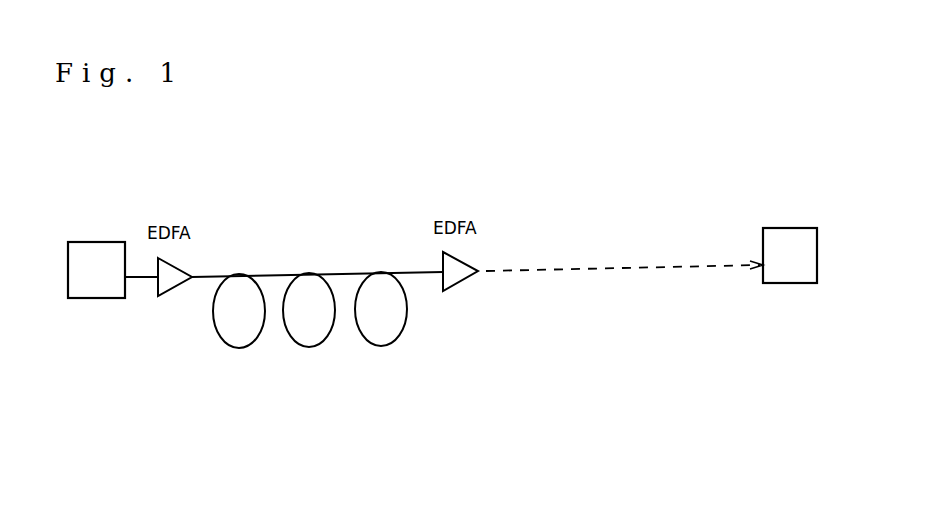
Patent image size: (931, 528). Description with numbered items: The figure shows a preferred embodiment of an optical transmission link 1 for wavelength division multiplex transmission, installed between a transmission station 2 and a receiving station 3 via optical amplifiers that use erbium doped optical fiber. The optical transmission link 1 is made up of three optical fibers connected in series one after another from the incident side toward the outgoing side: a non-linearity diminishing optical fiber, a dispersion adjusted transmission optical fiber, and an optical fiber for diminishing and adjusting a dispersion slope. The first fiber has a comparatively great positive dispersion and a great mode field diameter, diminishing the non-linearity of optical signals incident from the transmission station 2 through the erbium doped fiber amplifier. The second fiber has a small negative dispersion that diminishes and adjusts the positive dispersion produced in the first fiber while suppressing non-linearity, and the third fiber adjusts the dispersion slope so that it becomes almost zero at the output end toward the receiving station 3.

The optical transmission link 1 is at (412, 381).
The transmission station 2 is at (101, 242).
The receiving station 3 is at (778, 228).